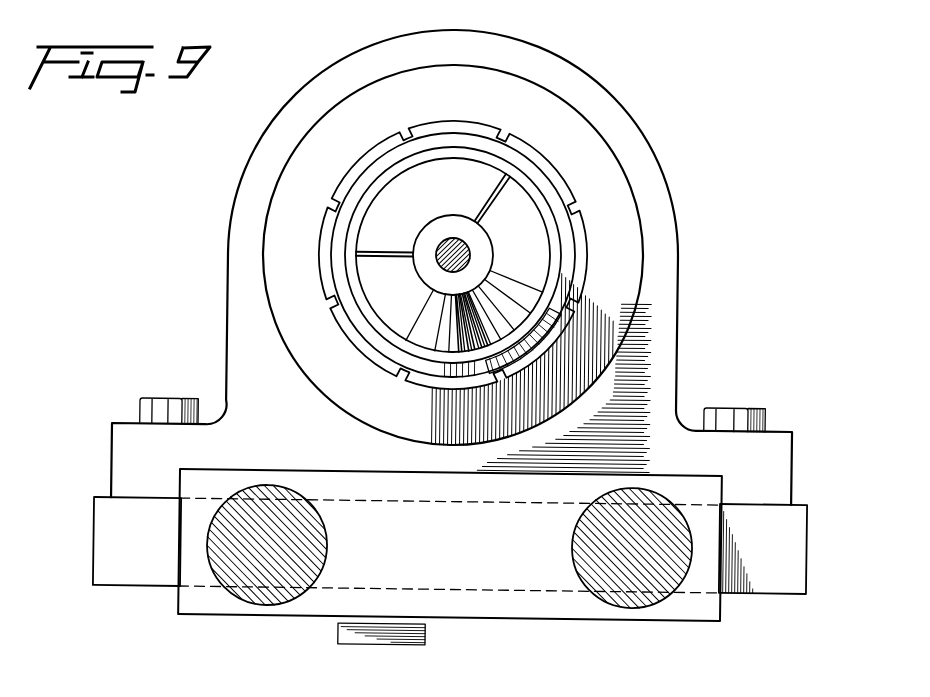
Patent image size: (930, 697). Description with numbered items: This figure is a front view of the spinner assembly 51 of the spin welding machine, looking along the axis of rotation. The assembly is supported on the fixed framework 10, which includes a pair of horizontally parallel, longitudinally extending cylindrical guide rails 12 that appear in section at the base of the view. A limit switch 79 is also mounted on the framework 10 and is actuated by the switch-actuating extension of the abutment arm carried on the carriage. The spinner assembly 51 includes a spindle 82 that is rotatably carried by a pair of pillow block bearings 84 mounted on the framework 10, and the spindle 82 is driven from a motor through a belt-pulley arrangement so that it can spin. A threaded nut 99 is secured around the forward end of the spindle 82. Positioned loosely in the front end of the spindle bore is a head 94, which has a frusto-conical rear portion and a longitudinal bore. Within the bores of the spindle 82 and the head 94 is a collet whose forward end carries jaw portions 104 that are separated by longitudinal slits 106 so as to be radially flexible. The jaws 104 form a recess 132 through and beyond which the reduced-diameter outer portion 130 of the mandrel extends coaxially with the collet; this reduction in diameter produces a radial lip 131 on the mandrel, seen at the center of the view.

The fixed framework 10 is at (800, 552).
The cylindrical guide rails 12 is at (251, 598).
The spinner assembly 51 is at (646, 138).
The limit switch 79 is at (415, 638).
The spindle 82 is at (496, 139).
The pillow block bearings 84 is at (276, 143).
The head 94 is at (553, 342).
The threaded nut 99 is at (285, 249).
The jaw portions 104 is at (522, 296).
The longitudinal slits 106 is at (397, 259).
The outer portion of the mandrel 130 is at (490, 262).
The radial lip 131 is at (455, 262).
The recess 132 is at (463, 250).